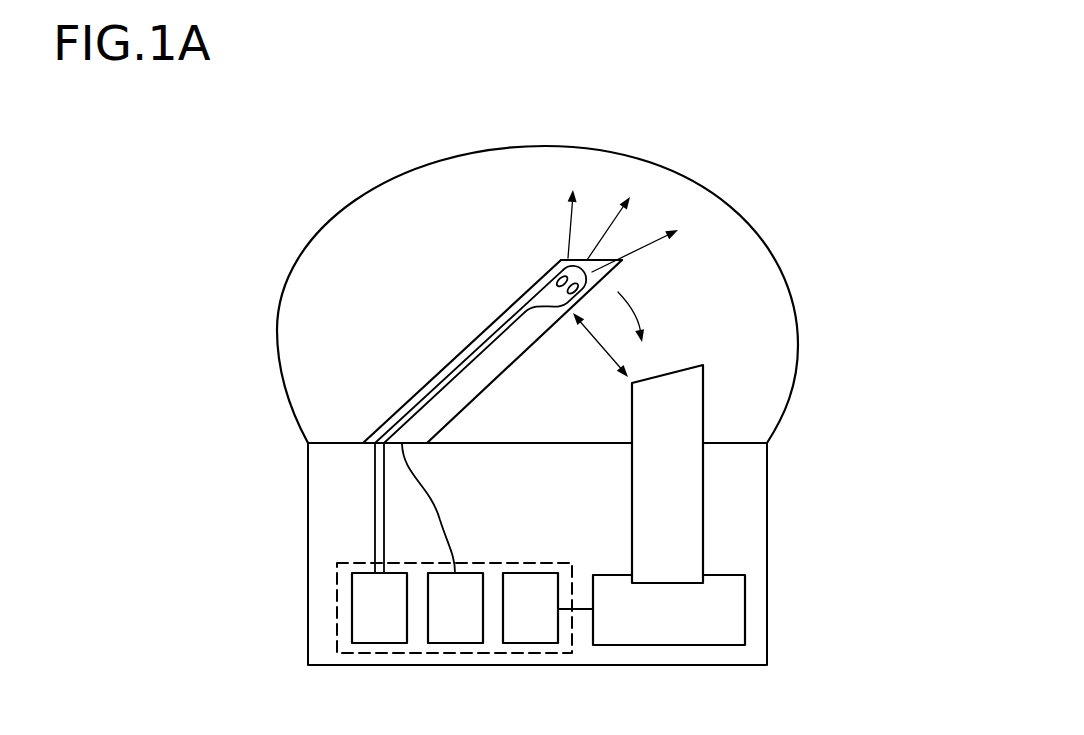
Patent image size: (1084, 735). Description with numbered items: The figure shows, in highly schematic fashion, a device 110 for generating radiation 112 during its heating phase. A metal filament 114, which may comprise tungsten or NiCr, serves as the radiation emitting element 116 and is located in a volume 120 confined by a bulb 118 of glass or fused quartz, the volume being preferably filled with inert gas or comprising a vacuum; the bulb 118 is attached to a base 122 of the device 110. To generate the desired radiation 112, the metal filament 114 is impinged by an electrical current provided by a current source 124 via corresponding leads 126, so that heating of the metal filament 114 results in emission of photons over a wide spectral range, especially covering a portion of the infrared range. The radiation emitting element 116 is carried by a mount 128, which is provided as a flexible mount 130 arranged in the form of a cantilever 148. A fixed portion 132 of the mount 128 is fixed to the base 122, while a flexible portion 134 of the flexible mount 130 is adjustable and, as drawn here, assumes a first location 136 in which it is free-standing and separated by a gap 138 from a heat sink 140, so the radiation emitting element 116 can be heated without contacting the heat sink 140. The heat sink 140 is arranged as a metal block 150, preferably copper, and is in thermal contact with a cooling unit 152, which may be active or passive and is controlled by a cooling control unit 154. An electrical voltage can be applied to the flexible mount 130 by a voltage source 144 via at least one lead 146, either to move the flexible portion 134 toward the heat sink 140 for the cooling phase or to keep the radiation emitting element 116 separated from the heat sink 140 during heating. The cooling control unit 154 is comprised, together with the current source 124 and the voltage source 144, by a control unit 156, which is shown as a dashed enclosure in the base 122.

The device for generating radiation 110 is at (848, 118).
The radiation 112 is at (660, 202).
The metal filament 114 is at (514, 294).
The radiation emitting element 116 is at (368, 399).
The bulb 118 is at (312, 238).
The volume 120 is at (479, 215).
The base 122 is at (767, 545).
The current source 124 is at (379, 608).
The leads 126 is at (468, 356).
The mount 128 is at (492, 408).
The flexible mount 130 is at (492, 408).
The fixed portion 132 is at (372, 420).
The flexible portion 134 is at (645, 267).
The first location 136 is at (707, 239).
The gap 138 is at (622, 358).
The heat sink 140 is at (695, 485).
The voltage source 144 is at (455, 608).
The lead 146 is at (402, 486).
The cantilever 148 is at (492, 390).
The metal block 150 is at (690, 520).
The cooling unit 152 is at (651, 610).
The cooling control unit 154 is at (530, 608).
The control unit 156 is at (337, 625).